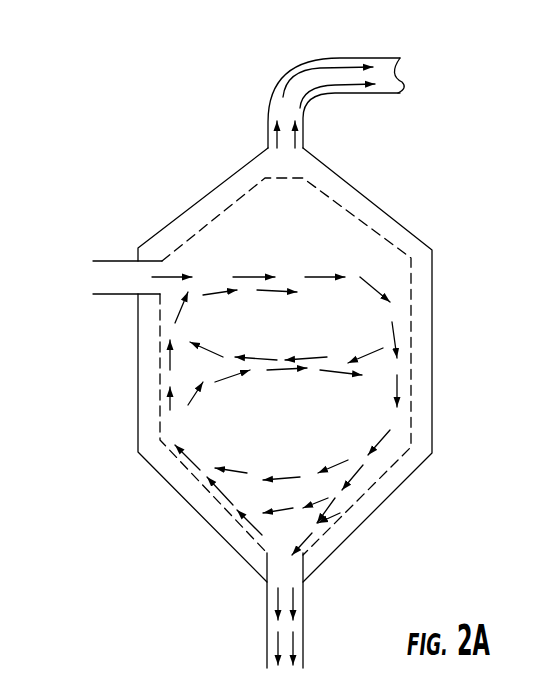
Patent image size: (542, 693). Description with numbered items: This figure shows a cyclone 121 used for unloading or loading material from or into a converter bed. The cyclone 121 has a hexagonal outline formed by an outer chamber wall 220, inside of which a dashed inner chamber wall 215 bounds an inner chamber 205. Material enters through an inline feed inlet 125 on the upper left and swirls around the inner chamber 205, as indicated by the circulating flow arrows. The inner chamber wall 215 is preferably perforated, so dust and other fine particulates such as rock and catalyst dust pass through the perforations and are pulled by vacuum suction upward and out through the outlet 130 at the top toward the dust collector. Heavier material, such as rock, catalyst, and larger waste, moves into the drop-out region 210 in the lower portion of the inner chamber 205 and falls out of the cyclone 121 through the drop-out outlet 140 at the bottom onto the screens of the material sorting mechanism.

The cyclone 121 is at (324, 365).
The inline feed inlet 125 is at (113, 261).
The outlet 130 is at (383, 58).
The drop-out outlet 140 is at (303, 627).
The inner chamber 205 is at (295, 352).
The drop-out region 210 is at (293, 493).
The inner chamber wall 215 is at (411, 282).
The outer chamber wall 220 is at (432, 420).